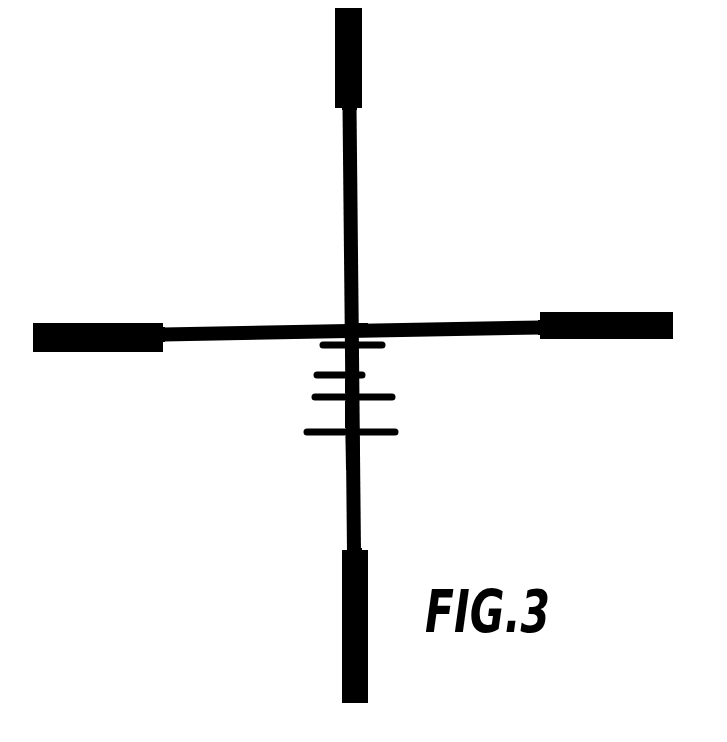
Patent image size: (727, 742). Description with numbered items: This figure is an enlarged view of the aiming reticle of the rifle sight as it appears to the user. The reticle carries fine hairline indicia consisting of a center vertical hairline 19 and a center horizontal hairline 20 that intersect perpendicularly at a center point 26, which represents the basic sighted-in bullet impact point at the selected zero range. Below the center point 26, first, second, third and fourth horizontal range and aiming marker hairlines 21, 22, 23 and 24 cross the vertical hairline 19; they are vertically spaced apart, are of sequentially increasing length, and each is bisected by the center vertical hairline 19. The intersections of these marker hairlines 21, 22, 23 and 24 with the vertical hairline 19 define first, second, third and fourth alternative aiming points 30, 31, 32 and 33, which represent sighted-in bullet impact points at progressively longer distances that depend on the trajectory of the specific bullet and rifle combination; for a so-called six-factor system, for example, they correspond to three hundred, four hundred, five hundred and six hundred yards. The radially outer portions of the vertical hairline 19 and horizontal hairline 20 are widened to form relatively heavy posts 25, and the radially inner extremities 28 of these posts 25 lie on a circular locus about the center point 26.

The center vertical hairline 19 is at (360, 207).
The center horizontal hairline 20 is at (500, 322).
The first horizontal range and aiming marker hairline 21 is at (323, 345).
The second horizontal range and aiming marker hairline 22 is at (360, 375).
The third horizontal range and aiming marker hairline 23 is at (313, 398).
The fourth horizontal range and aiming marker hairline 24 is at (393, 432).
The heavy posts 25 is at (362, 80).
The center point 26 is at (343, 315).
The innermost extremities 28 is at (342, 110).
The first alternative aiming point 30 is at (368, 323).
The second alternative aiming point 31 is at (347, 390).
The third alternative aiming point 32 is at (363, 403).
The fourth alternative aiming point 33 is at (347, 440).